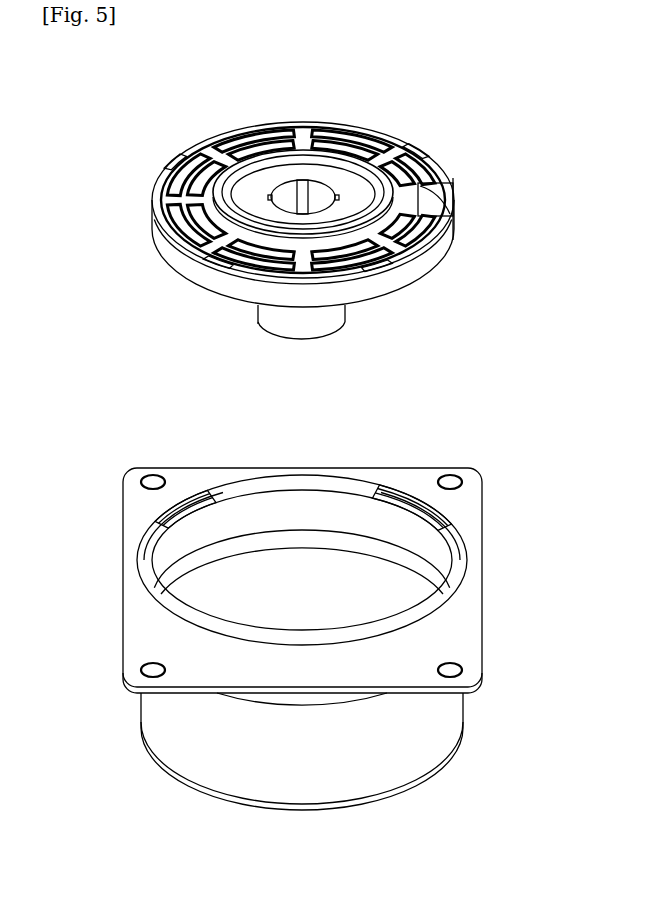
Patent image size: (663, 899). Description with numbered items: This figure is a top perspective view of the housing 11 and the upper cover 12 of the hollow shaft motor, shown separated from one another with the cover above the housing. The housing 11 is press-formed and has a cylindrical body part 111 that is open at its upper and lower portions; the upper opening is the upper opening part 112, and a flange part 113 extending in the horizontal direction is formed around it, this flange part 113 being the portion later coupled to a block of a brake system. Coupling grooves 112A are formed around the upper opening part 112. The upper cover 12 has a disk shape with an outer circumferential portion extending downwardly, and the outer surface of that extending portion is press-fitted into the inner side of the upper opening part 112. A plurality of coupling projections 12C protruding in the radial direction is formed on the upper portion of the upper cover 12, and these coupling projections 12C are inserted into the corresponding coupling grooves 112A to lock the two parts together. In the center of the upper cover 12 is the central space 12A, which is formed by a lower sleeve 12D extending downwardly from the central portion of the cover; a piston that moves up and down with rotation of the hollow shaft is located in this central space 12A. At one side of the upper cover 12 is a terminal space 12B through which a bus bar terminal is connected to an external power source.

The housing 11 is at (363, 634).
The body part 111 is at (393, 775).
The upper opening part 112 is at (330, 505).
The coupling grooves 112A is at (433, 507).
The flange part 113 is at (480, 630).
The upper cover 12 is at (423, 272).
The central space 12A is at (311, 199).
The terminal space 12B is at (455, 197).
The coupling projections 12C is at (195, 143).
The lower sleeve 12D is at (276, 322).